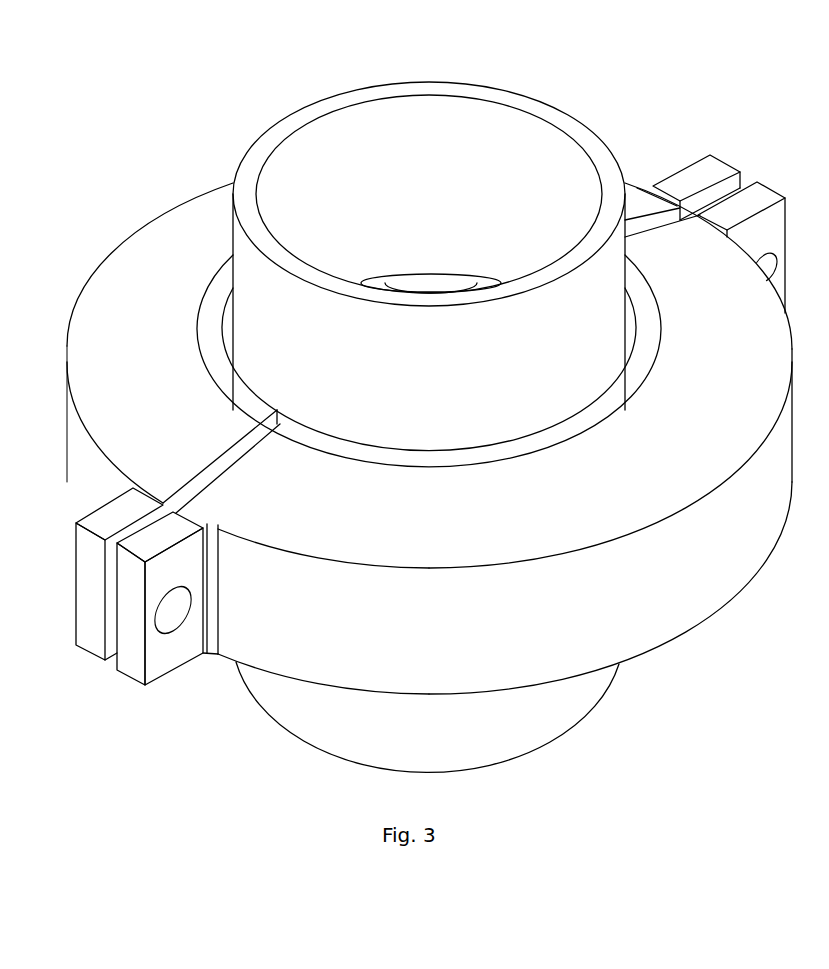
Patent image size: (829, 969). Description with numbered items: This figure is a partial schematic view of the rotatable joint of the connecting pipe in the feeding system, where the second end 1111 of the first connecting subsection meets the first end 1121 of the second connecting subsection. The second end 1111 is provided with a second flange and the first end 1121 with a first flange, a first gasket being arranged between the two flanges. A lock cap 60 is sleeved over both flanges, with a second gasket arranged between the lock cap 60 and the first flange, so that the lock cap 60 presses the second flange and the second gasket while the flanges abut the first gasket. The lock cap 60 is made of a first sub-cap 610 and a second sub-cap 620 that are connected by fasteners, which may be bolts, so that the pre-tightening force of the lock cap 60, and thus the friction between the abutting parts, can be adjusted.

The second end of the first connecting subsection 1111 is at (310, 175).
The first sub-cap 610 is at (143, 303).
The second sub-cap 620 is at (679, 588).
The lock cap 60 is at (262, 637).
The first end of the second connecting subsection 1121 is at (380, 718).